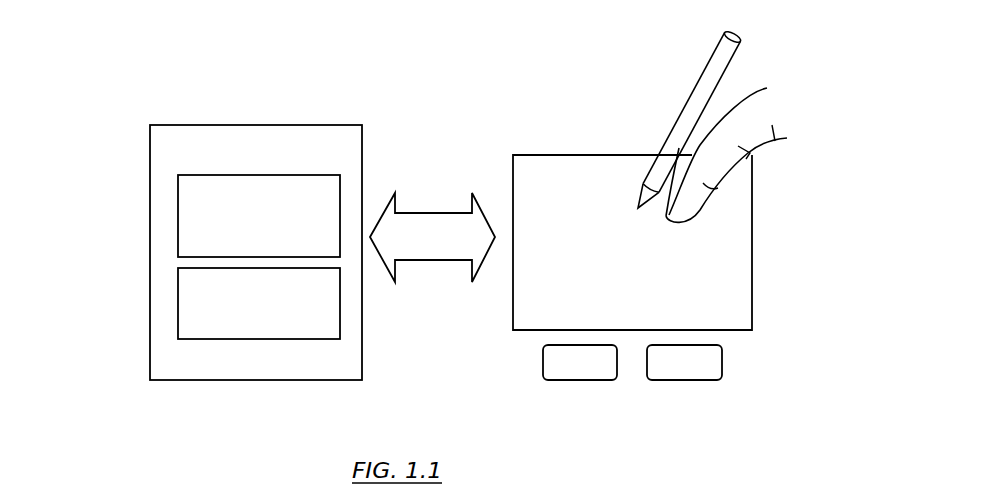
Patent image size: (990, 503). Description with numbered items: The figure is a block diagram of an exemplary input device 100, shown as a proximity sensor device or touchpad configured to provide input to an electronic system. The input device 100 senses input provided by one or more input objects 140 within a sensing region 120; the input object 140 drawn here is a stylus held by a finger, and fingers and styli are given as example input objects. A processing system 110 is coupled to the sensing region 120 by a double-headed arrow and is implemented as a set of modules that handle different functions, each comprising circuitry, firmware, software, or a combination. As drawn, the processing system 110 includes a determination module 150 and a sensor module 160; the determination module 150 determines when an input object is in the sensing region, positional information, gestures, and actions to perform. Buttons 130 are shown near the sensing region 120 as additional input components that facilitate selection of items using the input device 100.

The input device 100 is at (148, 73).
The processing system 110 is at (240, 151).
The sensing region 120 is at (752, 280).
The buttons 130 is at (693, 380).
The input object 140 is at (780, 15).
The determination module 150 is at (243, 203).
The sensor module 160 is at (243, 301).